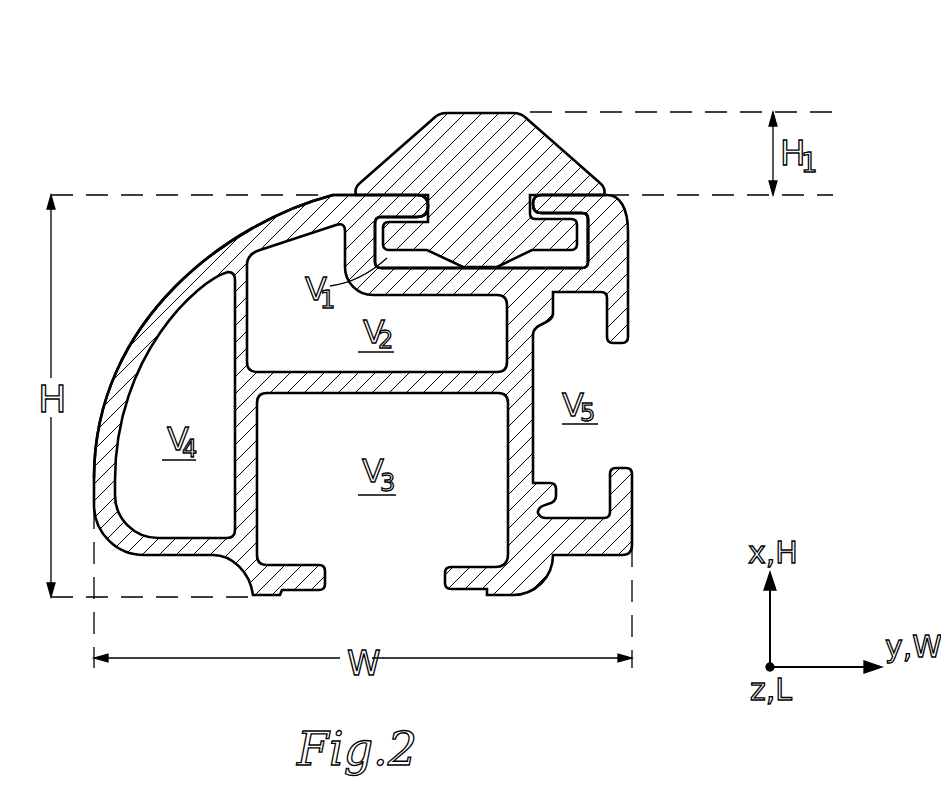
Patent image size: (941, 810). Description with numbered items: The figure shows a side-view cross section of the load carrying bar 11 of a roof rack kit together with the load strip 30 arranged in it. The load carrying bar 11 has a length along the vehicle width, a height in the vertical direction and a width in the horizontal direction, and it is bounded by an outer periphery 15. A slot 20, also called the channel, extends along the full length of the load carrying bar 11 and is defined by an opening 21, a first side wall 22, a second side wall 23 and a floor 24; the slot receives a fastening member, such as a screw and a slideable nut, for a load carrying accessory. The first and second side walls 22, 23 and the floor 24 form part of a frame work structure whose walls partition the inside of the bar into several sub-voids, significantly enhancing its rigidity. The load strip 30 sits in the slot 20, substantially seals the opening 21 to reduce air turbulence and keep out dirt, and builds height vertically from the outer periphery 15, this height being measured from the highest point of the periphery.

The load carrying bar 11 is at (657, 311).
The outer periphery 15 is at (157, 305).
The slot 20 is at (582, 228).
The opening 21 is at (535, 197).
The first side wall 22 is at (362, 222).
The second side wall 23 is at (592, 250).
The floor 24 is at (558, 258).
The load strip 30 is at (473, 110).